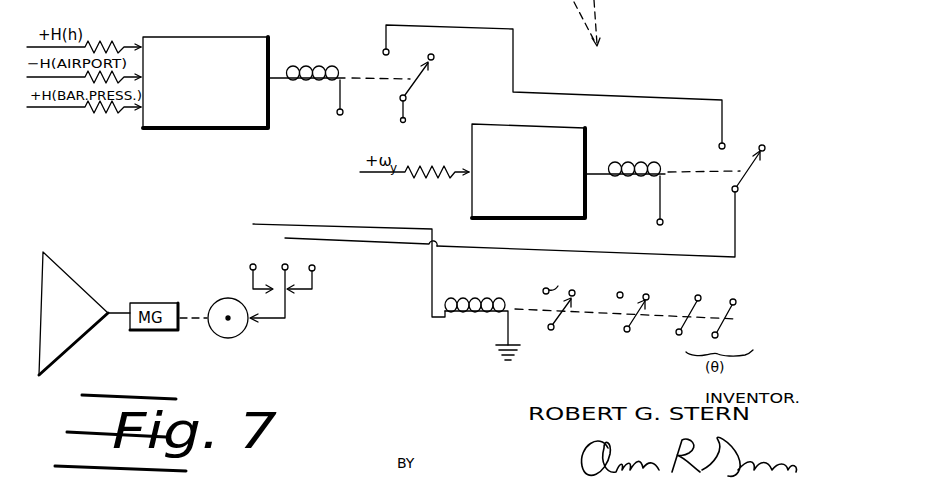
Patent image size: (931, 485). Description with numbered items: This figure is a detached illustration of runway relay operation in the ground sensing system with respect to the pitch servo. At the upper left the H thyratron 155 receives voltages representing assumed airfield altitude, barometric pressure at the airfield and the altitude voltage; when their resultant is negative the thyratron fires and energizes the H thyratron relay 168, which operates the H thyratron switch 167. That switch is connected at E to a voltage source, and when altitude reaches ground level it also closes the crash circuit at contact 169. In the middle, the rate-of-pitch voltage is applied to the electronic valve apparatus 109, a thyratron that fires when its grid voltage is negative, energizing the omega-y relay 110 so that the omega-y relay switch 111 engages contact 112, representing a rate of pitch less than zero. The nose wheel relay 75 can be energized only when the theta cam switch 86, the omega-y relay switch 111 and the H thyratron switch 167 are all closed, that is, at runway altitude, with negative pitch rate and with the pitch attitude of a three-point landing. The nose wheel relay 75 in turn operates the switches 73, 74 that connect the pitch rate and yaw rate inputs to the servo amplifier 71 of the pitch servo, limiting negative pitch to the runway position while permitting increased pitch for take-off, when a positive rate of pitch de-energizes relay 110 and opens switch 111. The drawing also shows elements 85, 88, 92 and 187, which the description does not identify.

The H thyratron 155 is at (196, 40).
The H thyratron relay 168 is at (295, 67).
The crash circuit contact 169 is at (390, 51).
The H thyratron switch 167 is at (409, 88).
The electronic valve apparatus 109 is at (557, 128).
The omega-y relay 110 is at (645, 164).
The contact 112 is at (726, 145).
The omega-y relay switch 111 is at (740, 186).
The servo amplifier 71 is at (68, 273).
The motor 85 is at (240, 331).
The theta cam switch 86 is at (285, 306).
The theta switch 88 is at (268, 290).
The nose wheel relay 75 is at (486, 298).
The N.W. potentiometer switch 187 is at (557, 321).
The switch 92 is at (633, 322).
The switch 73 is at (682, 334).
The switch 74 is at (719, 337).